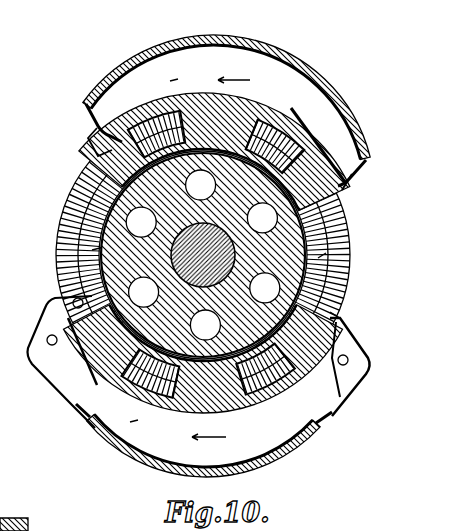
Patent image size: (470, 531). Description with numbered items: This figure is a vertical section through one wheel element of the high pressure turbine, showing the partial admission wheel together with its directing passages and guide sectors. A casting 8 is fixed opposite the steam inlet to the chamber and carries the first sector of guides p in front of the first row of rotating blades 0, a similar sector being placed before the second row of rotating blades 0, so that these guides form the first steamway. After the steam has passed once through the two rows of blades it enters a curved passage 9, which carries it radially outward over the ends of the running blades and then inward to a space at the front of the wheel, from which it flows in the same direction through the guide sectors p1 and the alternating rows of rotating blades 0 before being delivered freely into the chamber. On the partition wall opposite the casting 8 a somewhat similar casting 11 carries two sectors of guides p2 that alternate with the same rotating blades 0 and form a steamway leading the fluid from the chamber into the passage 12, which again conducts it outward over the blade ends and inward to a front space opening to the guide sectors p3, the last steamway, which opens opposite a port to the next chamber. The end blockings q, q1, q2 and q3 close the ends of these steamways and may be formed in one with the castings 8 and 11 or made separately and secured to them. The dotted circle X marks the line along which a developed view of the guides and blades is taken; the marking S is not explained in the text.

The curved passage 9 is at (237, 57).
The passage 12 is at (113, 422).
The end blocking q is at (315, 138).
The end blocking q1 is at (117, 127).
The end blocking q2 is at (300, 392).
The end blocking q3 is at (52, 282).
The first sector of guides p is at (350, 174).
The sector of guides p1 is at (100, 143).
The sector of guides p2 is at (355, 345).
The sector of guides p3 is at (63, 362).
The casting 8 is at (110, 167).
The row of rotating blades 0 is at (105, 222).
The slots S is at (92, 250).
The dotted circle X is at (326, 253).
The casting 11 is at (340, 318).